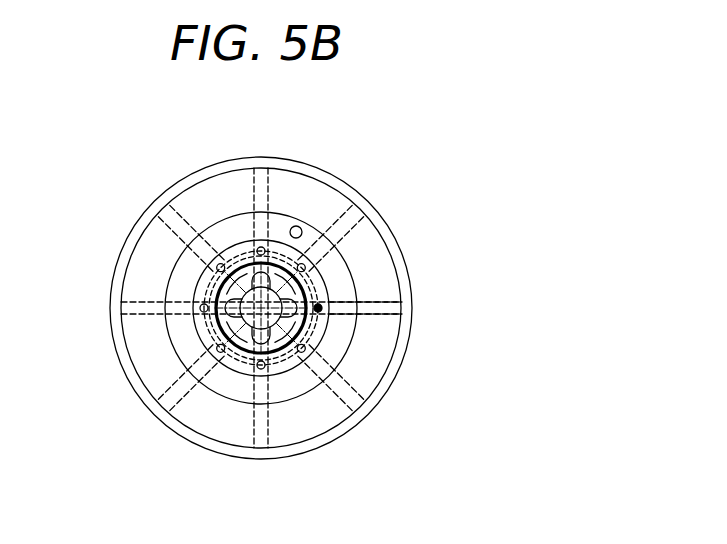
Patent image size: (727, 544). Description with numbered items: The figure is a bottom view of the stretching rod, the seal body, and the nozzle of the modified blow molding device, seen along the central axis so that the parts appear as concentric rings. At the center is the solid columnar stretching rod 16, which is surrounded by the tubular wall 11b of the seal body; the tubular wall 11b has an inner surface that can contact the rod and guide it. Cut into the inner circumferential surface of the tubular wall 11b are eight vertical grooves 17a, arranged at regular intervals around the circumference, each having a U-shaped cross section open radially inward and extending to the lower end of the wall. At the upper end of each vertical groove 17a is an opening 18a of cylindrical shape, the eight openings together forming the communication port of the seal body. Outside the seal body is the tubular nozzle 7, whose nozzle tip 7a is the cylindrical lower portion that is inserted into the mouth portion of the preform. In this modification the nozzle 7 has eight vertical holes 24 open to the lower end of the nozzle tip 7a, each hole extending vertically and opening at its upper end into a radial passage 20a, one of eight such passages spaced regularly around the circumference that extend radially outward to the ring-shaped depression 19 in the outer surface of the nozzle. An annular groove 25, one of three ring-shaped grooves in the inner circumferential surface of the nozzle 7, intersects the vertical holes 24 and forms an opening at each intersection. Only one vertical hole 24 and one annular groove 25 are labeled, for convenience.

The nozzle 7 is at (370, 199).
The nozzle tip 7a is at (192, 332).
The stretching rod 16 is at (242, 290).
The vertical groove 17a is at (289, 322).
The opening 18a is at (324, 308).
The ring-shaped depression 19 is at (405, 308).
The radial passage 20a is at (379, 300).
The vertical hole 24 is at (261, 372).
The annular groove 25 is at (274, 345).
The tubular wall 11b is at (243, 352).